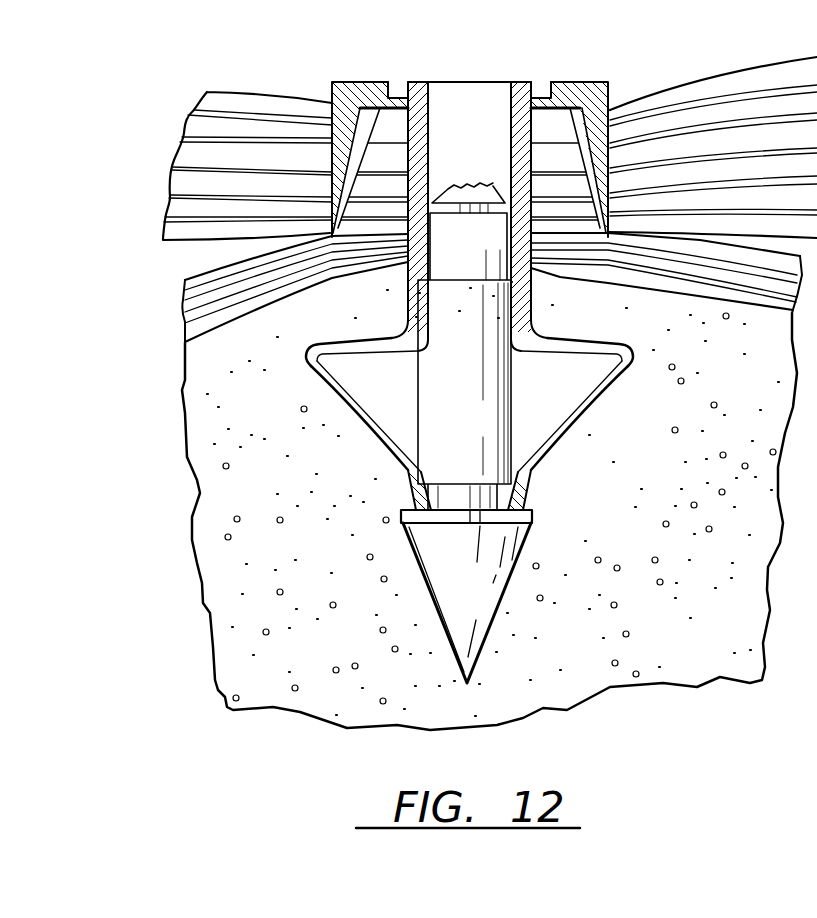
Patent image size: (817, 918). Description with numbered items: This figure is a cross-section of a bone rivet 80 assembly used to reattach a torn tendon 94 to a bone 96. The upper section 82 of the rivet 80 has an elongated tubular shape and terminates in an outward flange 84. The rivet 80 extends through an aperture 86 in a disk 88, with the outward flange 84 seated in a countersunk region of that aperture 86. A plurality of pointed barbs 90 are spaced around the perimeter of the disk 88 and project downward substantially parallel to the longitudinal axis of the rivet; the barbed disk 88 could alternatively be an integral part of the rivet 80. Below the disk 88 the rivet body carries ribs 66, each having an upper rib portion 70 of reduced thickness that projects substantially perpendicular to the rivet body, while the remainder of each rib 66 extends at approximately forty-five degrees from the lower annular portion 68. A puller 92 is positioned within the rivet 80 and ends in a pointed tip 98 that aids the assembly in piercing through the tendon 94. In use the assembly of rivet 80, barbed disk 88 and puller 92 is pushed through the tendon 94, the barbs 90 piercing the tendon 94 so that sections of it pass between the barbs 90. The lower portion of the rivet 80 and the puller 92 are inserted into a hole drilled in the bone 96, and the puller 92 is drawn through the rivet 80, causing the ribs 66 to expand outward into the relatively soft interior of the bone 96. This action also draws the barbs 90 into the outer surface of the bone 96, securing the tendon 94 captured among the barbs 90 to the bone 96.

The rib 66 is at (593, 403).
The lower annular portion 68 is at (522, 496).
The upper rib portion 70 is at (555, 342).
The bone rivet 80 is at (481, 70).
The upper section 82 is at (527, 142).
The outward flange 84 is at (548, 88).
The aperture 86 is at (397, 84).
The disk 88 is at (363, 88).
The pointed barbs 90 is at (612, 142).
The puller 92 is at (484, 426).
The tendon 94 is at (197, 232).
The bone 96 is at (197, 297).
The conical tip 98 is at (474, 576).